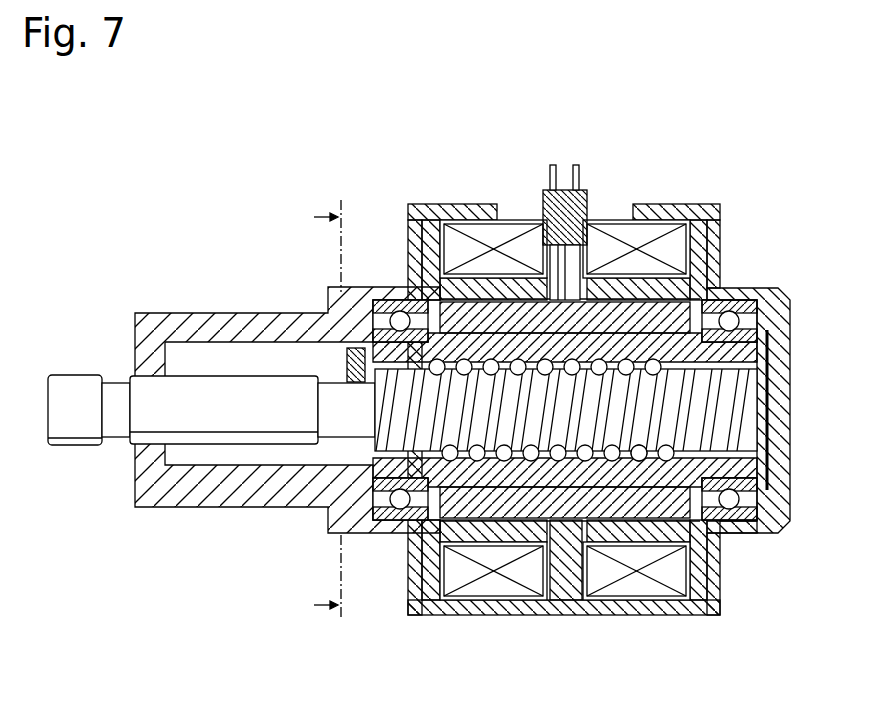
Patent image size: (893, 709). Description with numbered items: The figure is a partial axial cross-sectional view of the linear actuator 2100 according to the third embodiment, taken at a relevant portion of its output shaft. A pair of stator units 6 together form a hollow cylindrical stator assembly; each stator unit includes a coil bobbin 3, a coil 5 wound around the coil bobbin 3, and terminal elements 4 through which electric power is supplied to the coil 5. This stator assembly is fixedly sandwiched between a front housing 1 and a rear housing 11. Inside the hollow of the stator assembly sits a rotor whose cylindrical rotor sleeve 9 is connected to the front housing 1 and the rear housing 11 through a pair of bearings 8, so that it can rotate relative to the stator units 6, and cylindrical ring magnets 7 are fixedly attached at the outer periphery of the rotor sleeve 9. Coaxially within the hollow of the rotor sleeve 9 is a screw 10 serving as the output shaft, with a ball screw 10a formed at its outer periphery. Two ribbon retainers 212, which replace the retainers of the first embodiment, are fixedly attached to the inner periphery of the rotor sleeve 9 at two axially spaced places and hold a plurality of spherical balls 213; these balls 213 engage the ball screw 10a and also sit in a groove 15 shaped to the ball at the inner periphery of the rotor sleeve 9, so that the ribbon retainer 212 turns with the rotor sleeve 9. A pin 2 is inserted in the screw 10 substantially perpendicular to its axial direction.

The linear actuator 2100 is at (456, 368).
The front housing 1 is at (300, 493).
The pin 2 is at (345, 358).
The coil bobbin 3 is at (542, 205).
The terminal elements 4 is at (550, 168).
The coil 5 is at (607, 242).
The stator units 6 is at (662, 210).
The ring magnets 7 is at (655, 313).
The bearings 8 is at (740, 300).
The rotor sleeve 9 is at (705, 324).
The screw 10 is at (616, 404).
The ball screw 10a is at (705, 400).
The rear housing 11 is at (780, 450).
The groove 15 is at (668, 453).
The ribbon retainer 212 is at (735, 505).
The balls 213 is at (645, 458).